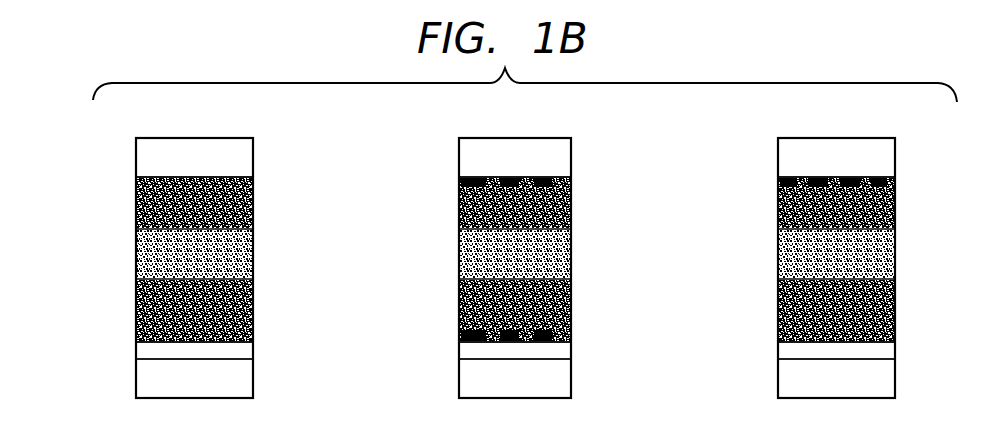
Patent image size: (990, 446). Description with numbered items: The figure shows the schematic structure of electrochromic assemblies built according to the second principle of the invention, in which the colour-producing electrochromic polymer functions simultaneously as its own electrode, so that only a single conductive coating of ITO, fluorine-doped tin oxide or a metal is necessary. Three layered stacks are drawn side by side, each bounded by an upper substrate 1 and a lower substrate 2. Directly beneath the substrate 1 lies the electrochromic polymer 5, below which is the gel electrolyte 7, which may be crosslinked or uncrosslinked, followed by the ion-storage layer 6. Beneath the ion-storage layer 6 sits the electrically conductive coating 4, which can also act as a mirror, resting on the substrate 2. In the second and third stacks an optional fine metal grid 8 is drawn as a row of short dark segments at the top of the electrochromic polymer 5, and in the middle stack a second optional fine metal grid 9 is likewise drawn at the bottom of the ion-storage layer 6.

The substrate 1 is at (240, 163).
The substrate 2 is at (235, 384).
The electrically conductive coating 4 is at (241, 351).
The electrochromic polymer 5 is at (253, 198).
The ion-storage layer 6 is at (253, 307).
The gel electrolyte 7 is at (241, 247).
The fine metal grid 8 is at (459, 181).
The fine metal grid 9 is at (459, 331).